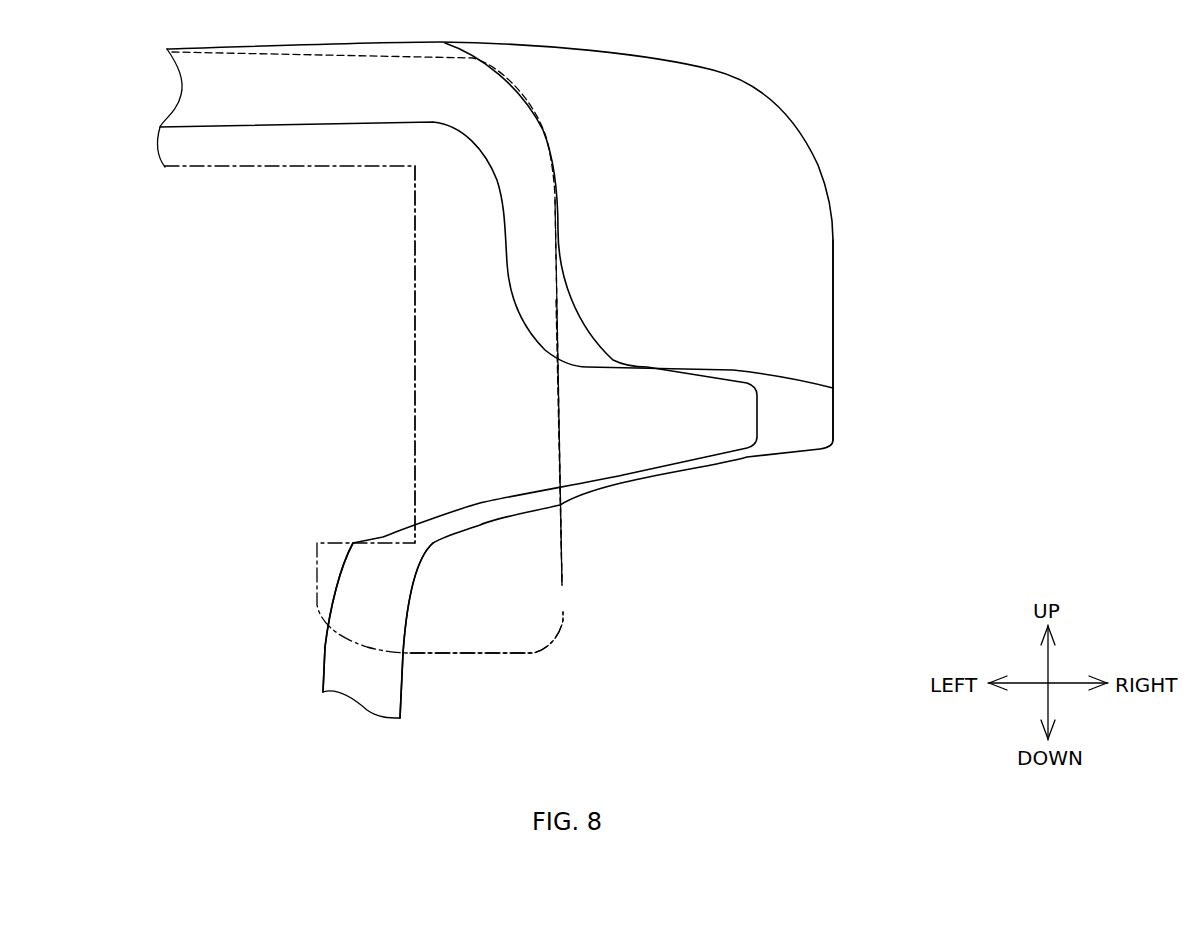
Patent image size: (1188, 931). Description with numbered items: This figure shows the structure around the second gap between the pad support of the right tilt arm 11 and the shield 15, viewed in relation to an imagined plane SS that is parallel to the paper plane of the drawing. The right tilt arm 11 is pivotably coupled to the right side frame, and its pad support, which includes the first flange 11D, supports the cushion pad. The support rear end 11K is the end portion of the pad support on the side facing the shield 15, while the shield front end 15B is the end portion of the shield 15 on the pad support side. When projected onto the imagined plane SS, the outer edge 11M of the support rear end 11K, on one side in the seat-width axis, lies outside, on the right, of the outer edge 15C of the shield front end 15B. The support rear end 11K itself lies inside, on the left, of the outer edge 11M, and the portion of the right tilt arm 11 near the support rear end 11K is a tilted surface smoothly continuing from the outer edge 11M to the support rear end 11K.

The right tilt arm 11 is at (766, 100).
The support rear end 11K is at (537, 243).
The outer edge 11M is at (835, 298).
The first flange 11D is at (402, 688).
The shield 15 is at (564, 567).
The shield front end 15B is at (545, 600).
The outer edge 15C is at (560, 437).
The imagined plane SS is at (297, 354).